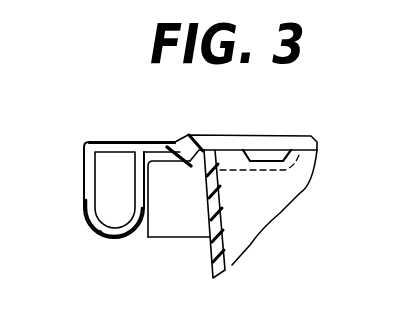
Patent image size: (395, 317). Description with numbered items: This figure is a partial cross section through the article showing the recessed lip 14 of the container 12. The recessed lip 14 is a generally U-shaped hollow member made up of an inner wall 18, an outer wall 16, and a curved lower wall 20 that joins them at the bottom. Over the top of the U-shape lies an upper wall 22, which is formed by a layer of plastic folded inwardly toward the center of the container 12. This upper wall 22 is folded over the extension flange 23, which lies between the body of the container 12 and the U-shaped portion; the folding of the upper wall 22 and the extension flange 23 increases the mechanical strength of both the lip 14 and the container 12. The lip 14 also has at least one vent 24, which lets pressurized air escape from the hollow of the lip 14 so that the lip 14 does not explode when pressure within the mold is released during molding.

The container 12 is at (226, 266).
The recessed lip 14 is at (65, 117).
The outer wall 16 is at (82, 191).
The inner wall 18 is at (144, 208).
The curved lower wall 20 is at (110, 239).
The upper wall 22 is at (119, 143).
The extension flange 23 is at (167, 161).
The vent 24 is at (266, 153).